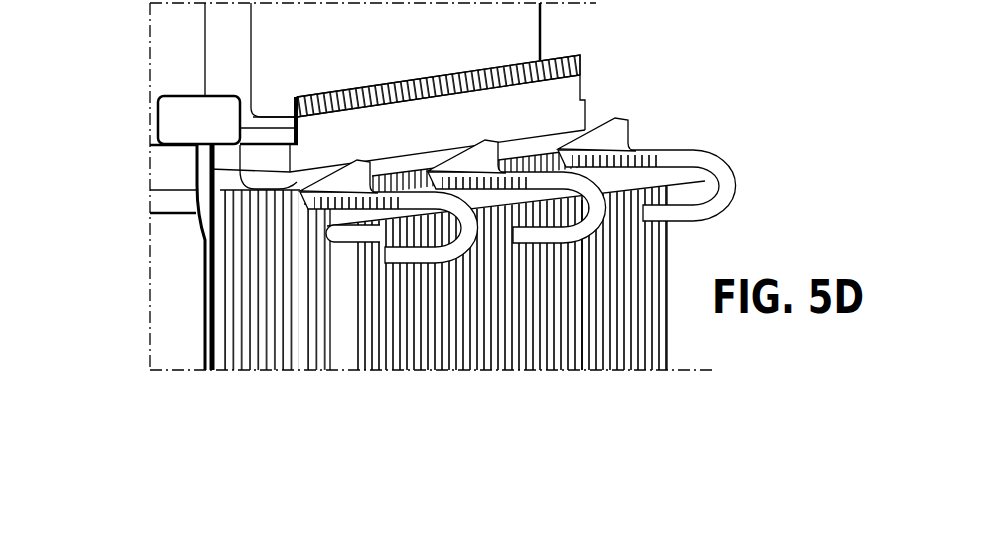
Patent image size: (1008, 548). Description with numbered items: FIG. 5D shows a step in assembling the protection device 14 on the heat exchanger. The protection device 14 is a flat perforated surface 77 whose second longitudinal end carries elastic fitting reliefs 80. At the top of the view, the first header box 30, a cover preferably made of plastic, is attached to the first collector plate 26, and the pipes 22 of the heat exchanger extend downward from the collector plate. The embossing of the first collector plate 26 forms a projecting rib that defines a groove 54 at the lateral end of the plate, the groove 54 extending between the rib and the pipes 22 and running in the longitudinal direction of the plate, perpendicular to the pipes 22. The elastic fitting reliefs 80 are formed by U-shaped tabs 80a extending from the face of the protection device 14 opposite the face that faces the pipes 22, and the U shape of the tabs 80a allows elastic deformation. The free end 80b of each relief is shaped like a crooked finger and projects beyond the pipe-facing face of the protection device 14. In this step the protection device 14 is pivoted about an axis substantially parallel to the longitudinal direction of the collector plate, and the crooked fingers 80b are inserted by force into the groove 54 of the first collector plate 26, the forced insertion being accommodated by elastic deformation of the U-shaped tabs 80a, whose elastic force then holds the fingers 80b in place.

The first header box 30 is at (218, 60).
The first collector plate 26 is at (225, 135).
The pipes 22 is at (258, 338).
The groove 54 is at (258, 195).
The protection device 14 is at (545, 335).
The flat perforated surface 77 is at (577, 305).
The elastic fitting reliefs 80 is at (526, 133).
The U-shaped tabs 80a is at (687, 167).
The free end 80b is at (492, 122).